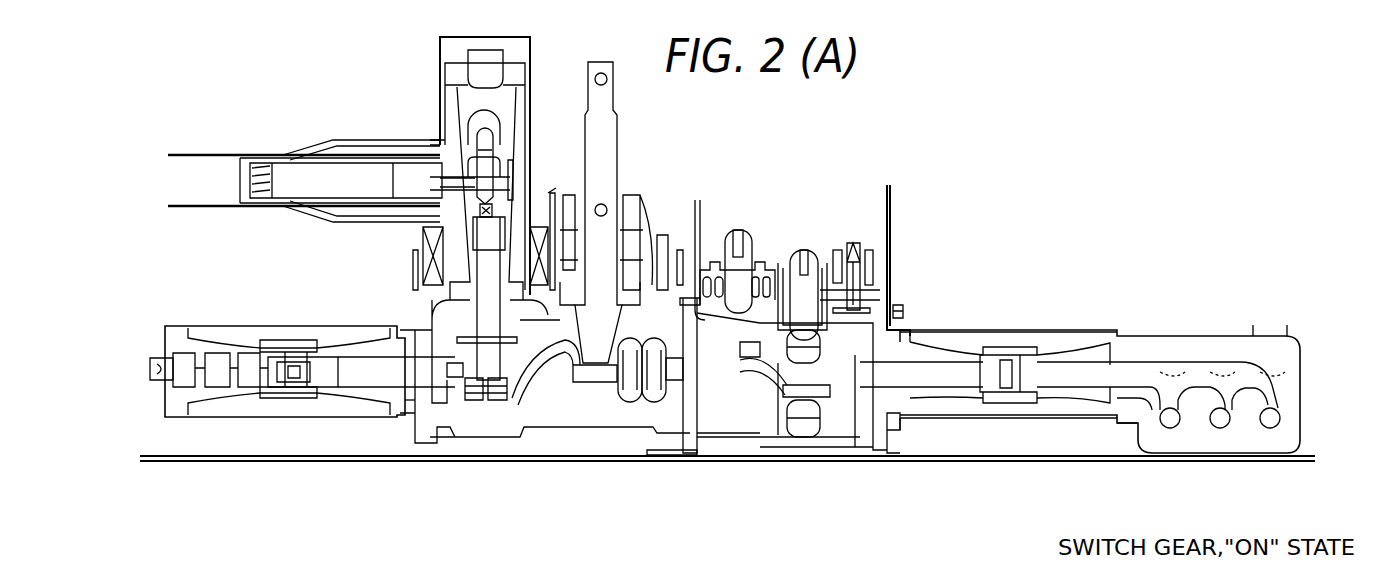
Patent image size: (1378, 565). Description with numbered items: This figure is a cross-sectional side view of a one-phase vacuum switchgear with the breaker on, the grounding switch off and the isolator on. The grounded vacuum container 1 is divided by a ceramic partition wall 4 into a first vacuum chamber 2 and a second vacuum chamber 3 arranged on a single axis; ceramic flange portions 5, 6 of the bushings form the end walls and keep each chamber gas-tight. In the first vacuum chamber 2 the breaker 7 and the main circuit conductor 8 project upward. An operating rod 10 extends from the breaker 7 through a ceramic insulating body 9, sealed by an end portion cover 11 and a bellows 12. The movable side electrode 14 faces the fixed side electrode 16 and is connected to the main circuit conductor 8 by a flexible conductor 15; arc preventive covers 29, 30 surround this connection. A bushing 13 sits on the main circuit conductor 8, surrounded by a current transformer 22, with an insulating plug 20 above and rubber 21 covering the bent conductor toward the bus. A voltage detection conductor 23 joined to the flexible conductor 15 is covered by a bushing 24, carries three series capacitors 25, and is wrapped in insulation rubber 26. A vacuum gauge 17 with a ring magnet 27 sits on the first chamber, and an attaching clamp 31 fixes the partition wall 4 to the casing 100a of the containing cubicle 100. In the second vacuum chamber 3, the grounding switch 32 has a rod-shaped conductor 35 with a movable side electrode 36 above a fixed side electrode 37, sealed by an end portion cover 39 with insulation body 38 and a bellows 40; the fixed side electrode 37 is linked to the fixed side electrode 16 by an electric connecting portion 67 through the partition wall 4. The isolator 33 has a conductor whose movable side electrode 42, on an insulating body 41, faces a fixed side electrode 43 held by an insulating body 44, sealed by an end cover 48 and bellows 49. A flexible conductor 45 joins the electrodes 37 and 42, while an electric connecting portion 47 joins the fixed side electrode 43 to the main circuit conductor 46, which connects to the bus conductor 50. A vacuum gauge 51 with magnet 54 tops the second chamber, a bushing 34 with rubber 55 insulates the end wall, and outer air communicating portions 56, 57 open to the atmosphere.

The vacuum container 1 is at (505, 445).
The first vacuum chamber 2 is at (545, 410).
The second vacuum chamber 3 is at (810, 430).
The partition wall 4 is at (690, 420).
The flange portion 5 is at (425, 436).
The flange portion 6 is at (888, 445).
The breaker 7 is at (598, 352).
The main circuit conductor 8 is at (452, 182).
The insulating body 9 is at (580, 270).
The operating rod 10 is at (610, 160).
The end portion cover 11 is at (553, 200).
The bellows 12 is at (640, 195).
The bushing 13 is at (462, 245).
The movable side electrode 14 is at (633, 403).
The flexible conductor 15 is at (545, 395).
The fixed side electrode 16 is at (650, 403).
The vacuum gauge 17 is at (660, 245).
The insulating plug 20 is at (470, 100).
The rubber 21 is at (342, 208).
The current transformer 22 is at (420, 256).
The voltage detection conductor 23 is at (350, 370).
The bushing 24 is at (360, 380).
The capacitors 25 is at (183, 357).
The insulation rubber 26 is at (330, 335).
The magnet 27 is at (681, 250).
The arc preventive cover 29 is at (565, 398).
The arc preventive cover 30 is at (625, 398).
The attaching clamp 31 is at (678, 440).
The grounding switch 32 is at (755, 240).
The isolator 33 is at (880, 290).
The bushing 34 is at (912, 400).
The rod-shaped conductor 35 is at (745, 270).
The movable side electrode 36 is at (760, 375).
The fixed side electrode 37 is at (745, 357).
The insulation body 38 is at (712, 265).
The end portion cover 39 is at (757, 277).
The bellows / rod-shaped conductor 40 is at (719, 277).
The insulating body 41 is at (862, 320).
The movable side electrode 42 is at (900, 316).
The fixed side electrode 43 is at (905, 340).
The insulating body 44 is at (800, 397).
The flexible conductor 45 is at (780, 395).
The main circuit conductor 46 is at (950, 370).
The electric connecting portion 47 is at (835, 400).
The end cover 48 is at (838, 270).
The bellows 49 is at (786, 290).
The main circuit conductor (bus) 50 is at (1170, 428).
The vacuum gauge 51 is at (854, 243).
The magnet 54 is at (842, 282).
The rubber 55 is at (1030, 400).
The outer air communicating portion 56 is at (950, 420).
The outer air communicating portion 57 is at (370, 442).
The electric connecting portion 67 is at (705, 372).
The containing cubicle 100 is at (200, 457).
The casing 100a is at (845, 457).